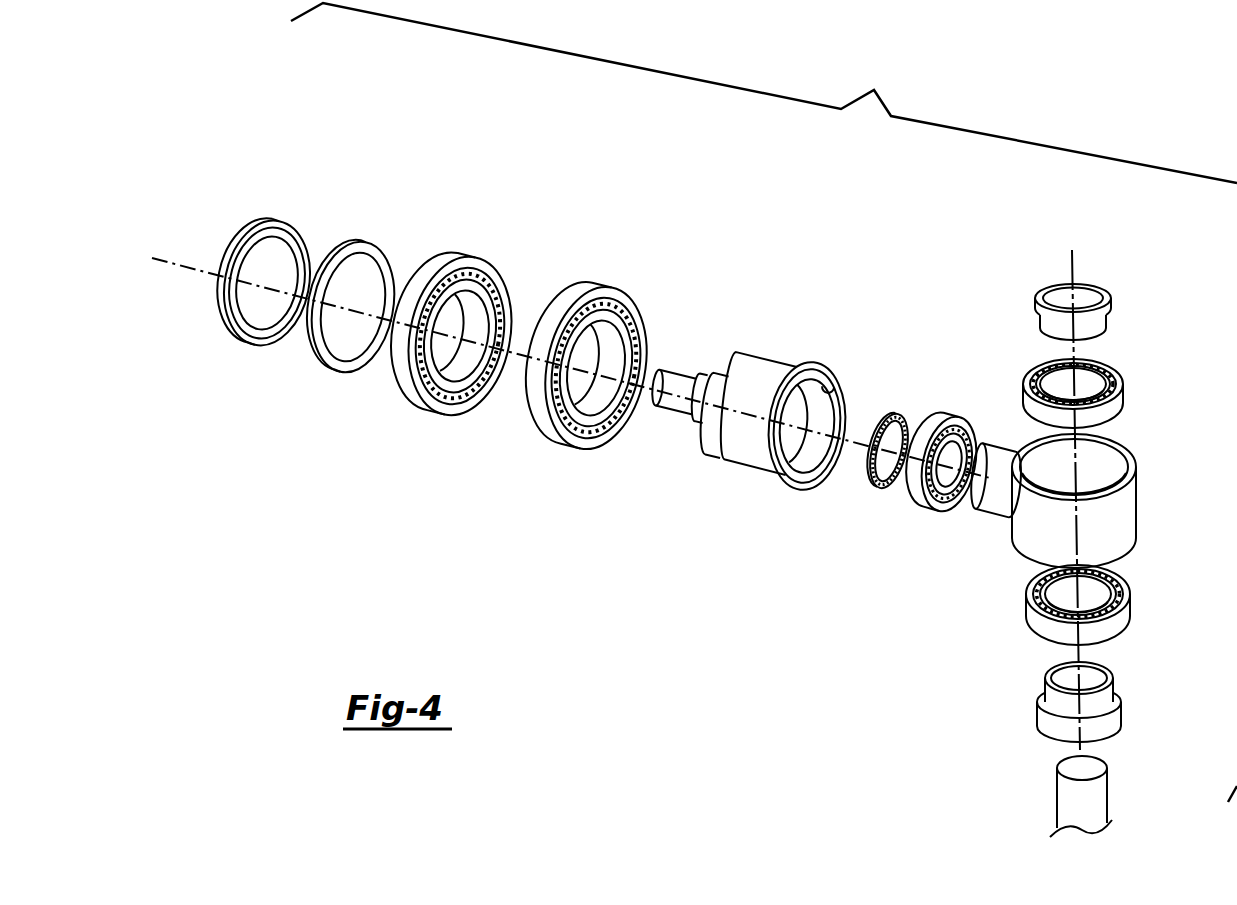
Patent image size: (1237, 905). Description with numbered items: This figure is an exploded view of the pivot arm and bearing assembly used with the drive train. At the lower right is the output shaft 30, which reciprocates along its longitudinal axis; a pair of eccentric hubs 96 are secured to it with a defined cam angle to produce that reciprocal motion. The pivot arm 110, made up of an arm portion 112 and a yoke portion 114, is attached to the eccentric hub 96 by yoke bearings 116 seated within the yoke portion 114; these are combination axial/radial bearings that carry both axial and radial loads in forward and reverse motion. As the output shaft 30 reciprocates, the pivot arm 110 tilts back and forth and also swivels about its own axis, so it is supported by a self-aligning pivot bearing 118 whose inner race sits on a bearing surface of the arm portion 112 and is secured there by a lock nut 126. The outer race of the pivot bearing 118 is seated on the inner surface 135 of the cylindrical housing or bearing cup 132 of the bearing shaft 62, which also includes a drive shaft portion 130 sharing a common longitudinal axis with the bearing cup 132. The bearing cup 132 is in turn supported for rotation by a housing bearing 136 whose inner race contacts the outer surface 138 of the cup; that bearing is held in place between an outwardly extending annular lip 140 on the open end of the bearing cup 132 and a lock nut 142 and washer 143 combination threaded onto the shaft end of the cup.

The output shaft 30 is at (1096, 790).
The bearing shaft 62 is at (760, 420).
The eccentric hub 96 is at (1103, 318).
The pivot arm 110 is at (1084, 513).
The arm portion 112 is at (986, 506).
The yoke portion 114 is at (1125, 497).
The yoke bearings 116 is at (1122, 393).
The pivot bearing 118 is at (918, 512).
The lock nut 126 is at (878, 486).
The drive shaft portion 130 is at (672, 412).
The cylindrical housing or bearing cup 132 is at (730, 466).
The inner surface 135 is at (828, 385).
The housing bearing 136 is at (538, 439).
The outer surface 138 is at (757, 464).
The annular lip 140 is at (818, 360).
The lock nut 142 is at (238, 344).
The washer 143 is at (326, 372).